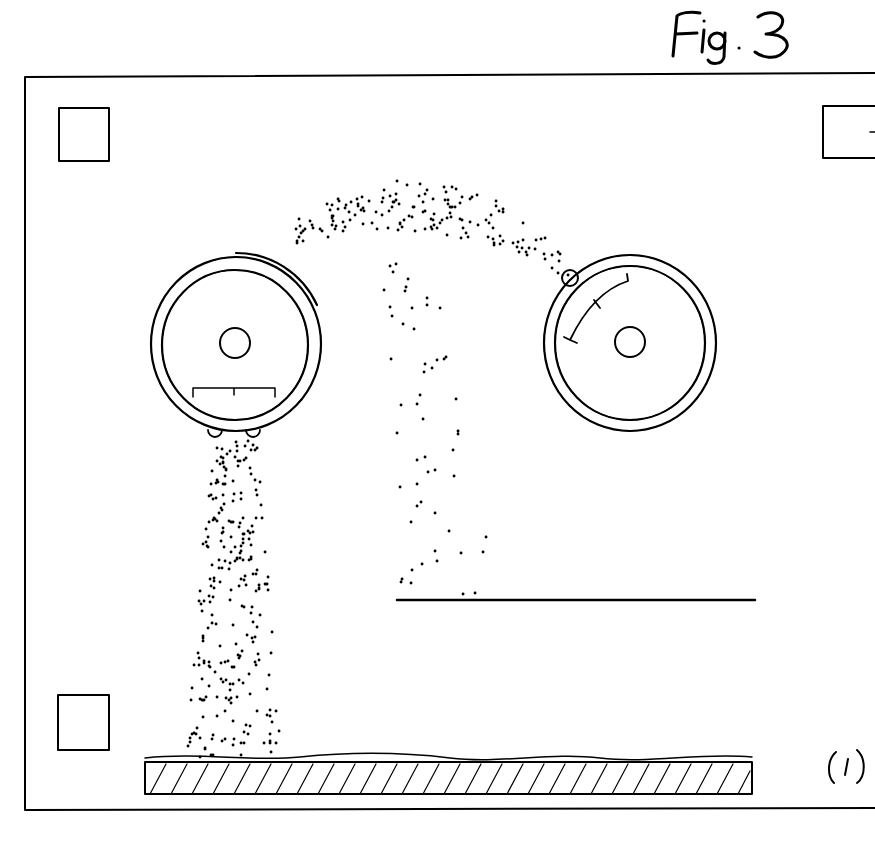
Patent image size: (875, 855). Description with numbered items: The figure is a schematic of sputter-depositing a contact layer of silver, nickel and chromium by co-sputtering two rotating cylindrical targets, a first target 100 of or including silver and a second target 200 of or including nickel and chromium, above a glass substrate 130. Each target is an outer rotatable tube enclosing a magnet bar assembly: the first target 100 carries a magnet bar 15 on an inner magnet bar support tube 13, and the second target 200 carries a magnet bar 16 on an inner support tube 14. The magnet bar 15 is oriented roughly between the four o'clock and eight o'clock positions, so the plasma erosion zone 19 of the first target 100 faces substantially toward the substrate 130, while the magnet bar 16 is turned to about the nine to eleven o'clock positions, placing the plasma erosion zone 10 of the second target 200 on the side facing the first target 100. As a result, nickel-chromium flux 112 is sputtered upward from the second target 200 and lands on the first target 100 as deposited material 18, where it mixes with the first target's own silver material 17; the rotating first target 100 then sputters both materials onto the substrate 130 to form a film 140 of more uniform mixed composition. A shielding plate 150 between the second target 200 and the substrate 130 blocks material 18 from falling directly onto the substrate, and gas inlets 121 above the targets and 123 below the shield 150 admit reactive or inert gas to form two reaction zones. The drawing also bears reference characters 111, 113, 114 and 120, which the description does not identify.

The first rotating sputtering target 100 is at (236, 311).
The second rotating sputtering target 200 is at (630, 309).
The plasma erosion zone of the second target 10 is at (574, 270).
The inner magnet bar support tube of the first target 13 is at (237, 343).
The inner magnet bar support tube of the second target 14 is at (634, 340).
The magnet bar of the first target 15 is at (277, 391).
The magnet bar of the second target 16 is at (628, 281).
The first target's own target material 17 is at (151, 345).
The target material deposited from the second target 18 is at (287, 265).
The plasma erosion zone of the first target 19 is at (256, 437).
The falling powder stream 111 is at (262, 567).
The flux 112 is at (445, 193).
The first drum inner shell 113 is at (176, 292).
The second drum inner shell 114 is at (703, 367).
The housing 120 is at (333, 76).
The gas inlet 121 is at (103, 135).
The gas inlet 123 is at (102, 723).
The glass substrate 130 is at (740, 778).
The film 140 is at (733, 757).
The shield 150 is at (738, 600).